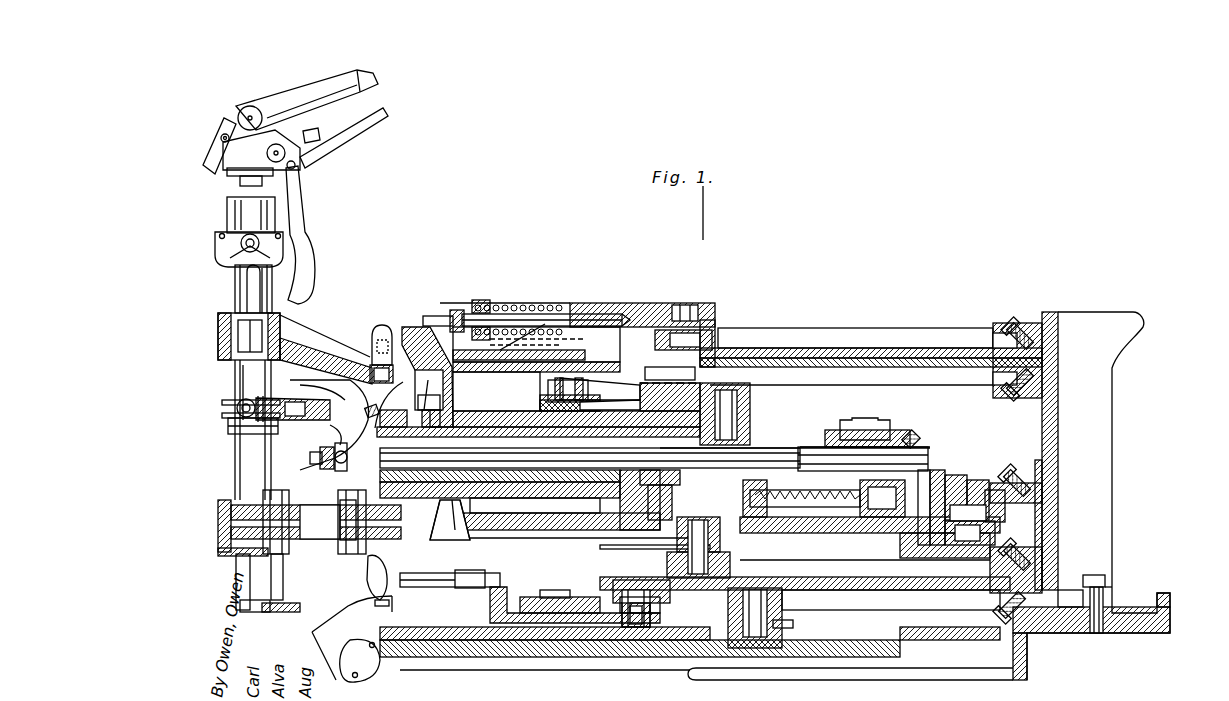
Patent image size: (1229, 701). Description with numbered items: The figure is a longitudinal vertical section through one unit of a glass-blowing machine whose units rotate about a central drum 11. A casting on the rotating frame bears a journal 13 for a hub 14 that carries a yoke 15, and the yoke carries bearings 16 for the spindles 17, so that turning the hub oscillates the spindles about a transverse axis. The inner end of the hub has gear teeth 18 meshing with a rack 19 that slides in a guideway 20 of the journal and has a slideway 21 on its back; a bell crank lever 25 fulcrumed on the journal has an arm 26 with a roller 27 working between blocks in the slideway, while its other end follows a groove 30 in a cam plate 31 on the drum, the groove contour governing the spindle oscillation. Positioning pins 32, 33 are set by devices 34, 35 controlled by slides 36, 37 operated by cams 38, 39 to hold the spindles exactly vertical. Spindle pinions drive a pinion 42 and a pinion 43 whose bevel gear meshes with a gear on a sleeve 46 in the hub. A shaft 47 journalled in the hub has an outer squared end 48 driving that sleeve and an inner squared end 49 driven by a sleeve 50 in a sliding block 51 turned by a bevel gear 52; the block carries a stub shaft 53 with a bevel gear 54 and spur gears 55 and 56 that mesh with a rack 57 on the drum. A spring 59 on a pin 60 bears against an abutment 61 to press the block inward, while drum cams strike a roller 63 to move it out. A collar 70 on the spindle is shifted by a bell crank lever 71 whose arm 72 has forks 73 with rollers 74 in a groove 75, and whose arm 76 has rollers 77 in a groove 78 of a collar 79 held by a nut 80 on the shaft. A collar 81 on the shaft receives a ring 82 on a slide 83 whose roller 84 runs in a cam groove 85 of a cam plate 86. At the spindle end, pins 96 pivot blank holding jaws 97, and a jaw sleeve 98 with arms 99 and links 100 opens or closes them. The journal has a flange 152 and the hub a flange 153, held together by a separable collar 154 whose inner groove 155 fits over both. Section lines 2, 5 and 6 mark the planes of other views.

The central drum 11 is at (1058, 315).
The journal 13 is at (483, 418).
The hub 14 is at (426, 392).
The yoke 15 is at (356, 356).
The bearings 16 is at (226, 316).
The spindles 17 is at (238, 283).
The gear teeth 18 is at (540, 504).
The rack 19 is at (505, 453).
The guideway 20 is at (600, 397).
The slideway 21 is at (516, 418).
The bell crank lever 25 is at (750, 405).
The arm 26 is at (640, 399).
The roller 27 is at (552, 393).
The groove 30 is at (670, 372).
The cam plate 31 is at (828, 357).
The positioning pin 32 is at (372, 565).
The positioning pin 33 is at (382, 326).
The device 34 is at (472, 575).
The device 35 is at (436, 314).
The slide 36 is at (508, 605).
The slide 37 is at (603, 302).
The cam 38 is at (647, 603).
The cam 39 is at (716, 330).
The pinion 42 is at (298, 505).
The pinion 43 is at (340, 505).
The sleeve 46 is at (452, 423).
The shaft 47 is at (699, 465).
The outer squared end 48 is at (369, 500).
The inner squared end 49 is at (914, 458).
The sleeve 50 is at (840, 437).
The sliding block 51 is at (886, 431).
The bevel gear 52 is at (915, 444).
The stub shaft 53 is at (927, 491).
The bevel gear 54 is at (956, 489).
The spur gear 55 is at (975, 493).
The spur gear 56 is at (968, 511).
The rack 57 is at (990, 490).
The spring 59 is at (832, 505).
The pin 60 is at (805, 489).
The abutment 61 is at (746, 488).
The roller 63 is at (996, 527).
The collar 70 is at (236, 406).
The bell crank lever 71 is at (322, 395).
The arm 72 is at (318, 400).
The forks 73 is at (262, 399).
The rollers 74 is at (240, 393).
The groove 75 is at (232, 412).
The arm 76 is at (330, 429).
The rollers 77 is at (322, 451).
The groove 78 is at (340, 450).
The collar 79 is at (342, 442).
The nut 80 is at (312, 460).
The collar 81 is at (672, 477).
The ring 82 is at (672, 492).
The slide 83 is at (655, 523).
The roller 84 is at (668, 552).
The cam groove 85 is at (668, 568).
The cam plate 86 is at (776, 578).
The pins 96 is at (248, 300).
The blank holding jaws 97 is at (228, 204).
The jaw sleeve 98 is at (266, 301).
The arms 99 is at (226, 249).
The links 100 is at (228, 231).
The flange 152 is at (452, 530).
The flange 153 is at (432, 524).
The collar 154 is at (425, 377).
The inner groove 155 is at (435, 385).
The section line 2— 2 is at (1150, 427).
The section line 5— 5 is at (772, 383).
The section line 6— 6 is at (284, 436).